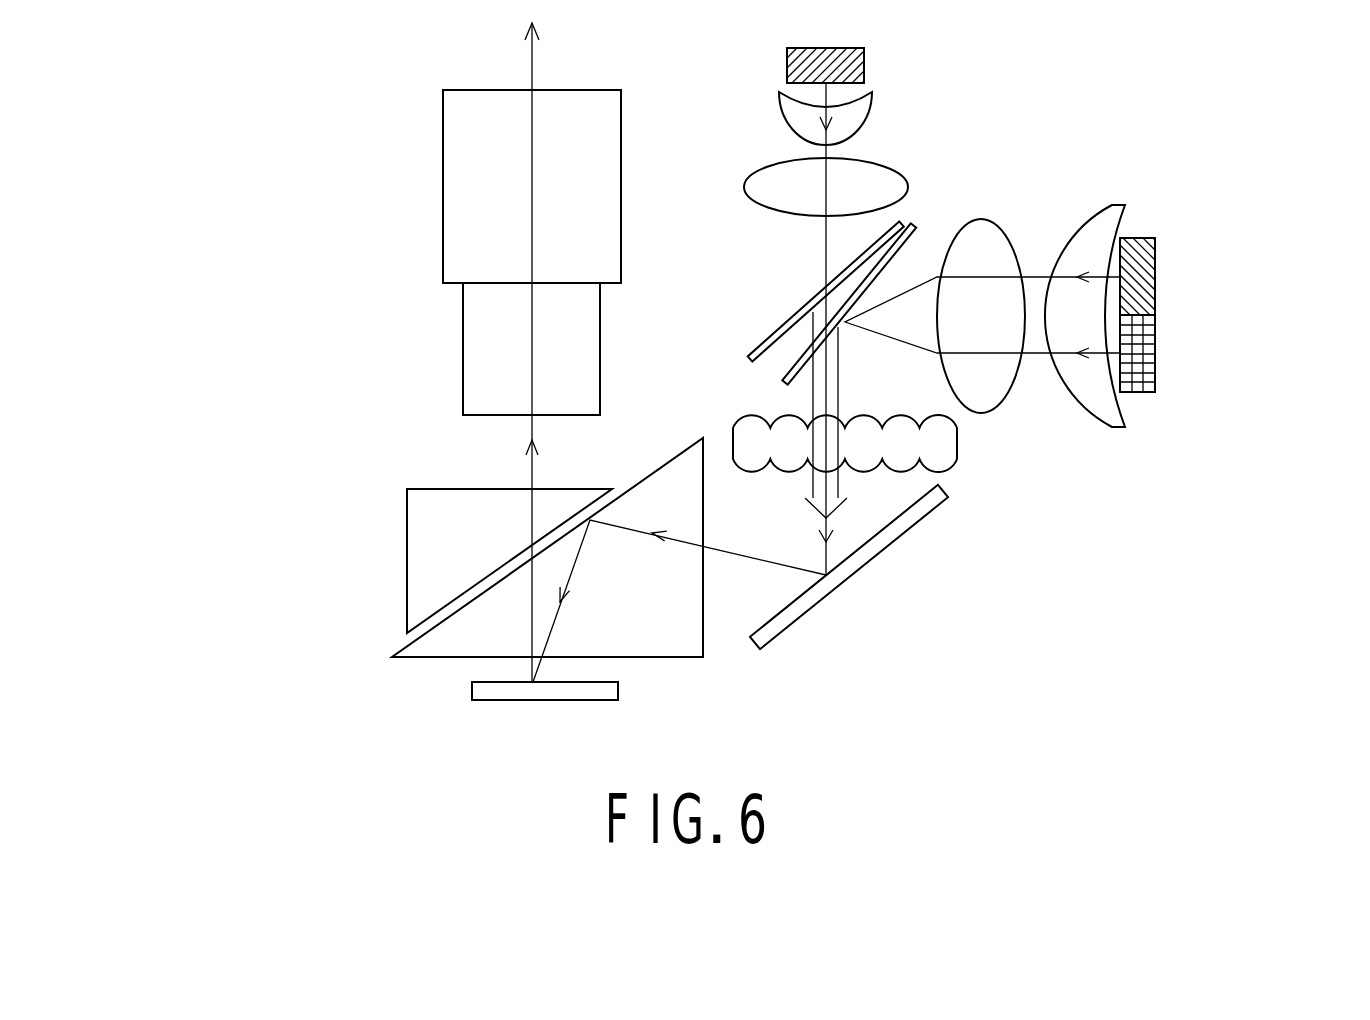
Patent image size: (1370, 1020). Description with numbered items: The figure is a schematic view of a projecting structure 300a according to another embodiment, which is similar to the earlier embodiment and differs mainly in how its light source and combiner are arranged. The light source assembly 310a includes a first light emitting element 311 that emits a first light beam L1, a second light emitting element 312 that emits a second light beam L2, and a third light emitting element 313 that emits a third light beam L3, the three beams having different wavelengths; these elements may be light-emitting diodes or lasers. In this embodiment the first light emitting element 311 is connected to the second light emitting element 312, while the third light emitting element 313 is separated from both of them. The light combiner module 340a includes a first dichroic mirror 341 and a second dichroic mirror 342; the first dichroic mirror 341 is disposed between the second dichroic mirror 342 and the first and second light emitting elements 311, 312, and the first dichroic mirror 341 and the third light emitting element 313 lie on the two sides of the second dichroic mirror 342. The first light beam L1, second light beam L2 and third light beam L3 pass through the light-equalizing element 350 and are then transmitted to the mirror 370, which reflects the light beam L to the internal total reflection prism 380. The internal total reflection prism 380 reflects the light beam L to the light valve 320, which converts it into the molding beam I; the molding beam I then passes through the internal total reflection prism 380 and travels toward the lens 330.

The projecting structure 300a is at (218, 123).
The light source assembly 310a is at (1060, 215).
The first light emitting element 311 is at (1157, 275).
The second light emitting element 312 is at (1193, 353).
The third light emitting element 313 is at (860, 45).
The light valve 320 is at (563, 692).
The lens 330 is at (480, 197).
The light combiner module 340a is at (900, 222).
The first dichroic mirror 341 is at (923, 237).
The second dichroic mirror 342 is at (890, 215).
The light-equalizing element 350 is at (943, 450).
The mirror 370 is at (795, 607).
The internal total reflection prism 380 is at (463, 628).
The first light beam L1 is at (1035, 277).
The second light beam L2 is at (1040, 357).
The third light beam L3 is at (823, 155).
The light beam L is at (825, 522).
The molding beam I is at (532, 473).